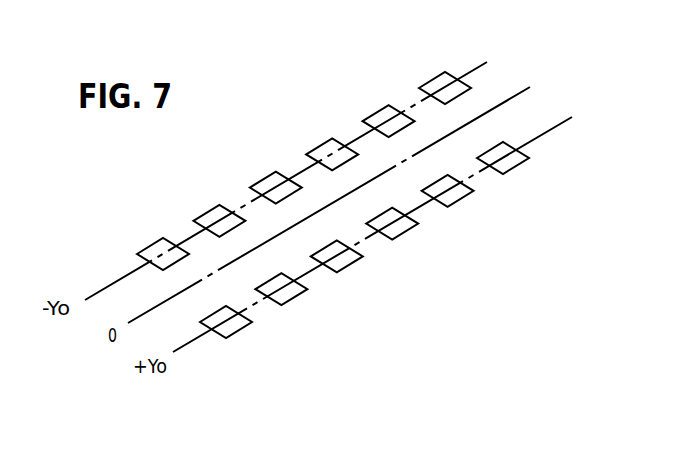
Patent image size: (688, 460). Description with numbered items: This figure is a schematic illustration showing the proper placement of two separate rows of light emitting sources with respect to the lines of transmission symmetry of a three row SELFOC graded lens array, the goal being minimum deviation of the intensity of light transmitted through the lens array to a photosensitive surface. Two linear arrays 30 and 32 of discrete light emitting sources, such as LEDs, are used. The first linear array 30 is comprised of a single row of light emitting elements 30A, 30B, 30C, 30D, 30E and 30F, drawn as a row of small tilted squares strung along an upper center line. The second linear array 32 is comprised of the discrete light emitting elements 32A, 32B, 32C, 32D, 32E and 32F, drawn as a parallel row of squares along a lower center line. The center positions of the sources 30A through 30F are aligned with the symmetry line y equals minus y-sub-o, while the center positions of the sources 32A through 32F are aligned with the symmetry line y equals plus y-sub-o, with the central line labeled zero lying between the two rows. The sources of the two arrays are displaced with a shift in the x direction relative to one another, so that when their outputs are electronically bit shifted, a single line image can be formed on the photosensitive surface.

The linear array 30 is at (462, 58).
The light emitting element 30A is at (158, 238).
The light emitting element 30B is at (213, 212).
The light emitting element 30C is at (268, 178).
The light emitting element 30D is at (323, 145).
The light emitting element 30E is at (379, 112).
The light emitting element 30F is at (434, 80).
The linear array 32 is at (533, 125).
The light emitting element 32A is at (237, 325).
The light emitting element 32B is at (290, 293).
The light emitting element 32C is at (345, 262).
The light emitting element 32D is at (402, 228).
The light emitting element 32E is at (457, 197).
The light emitting element 32F is at (512, 163).